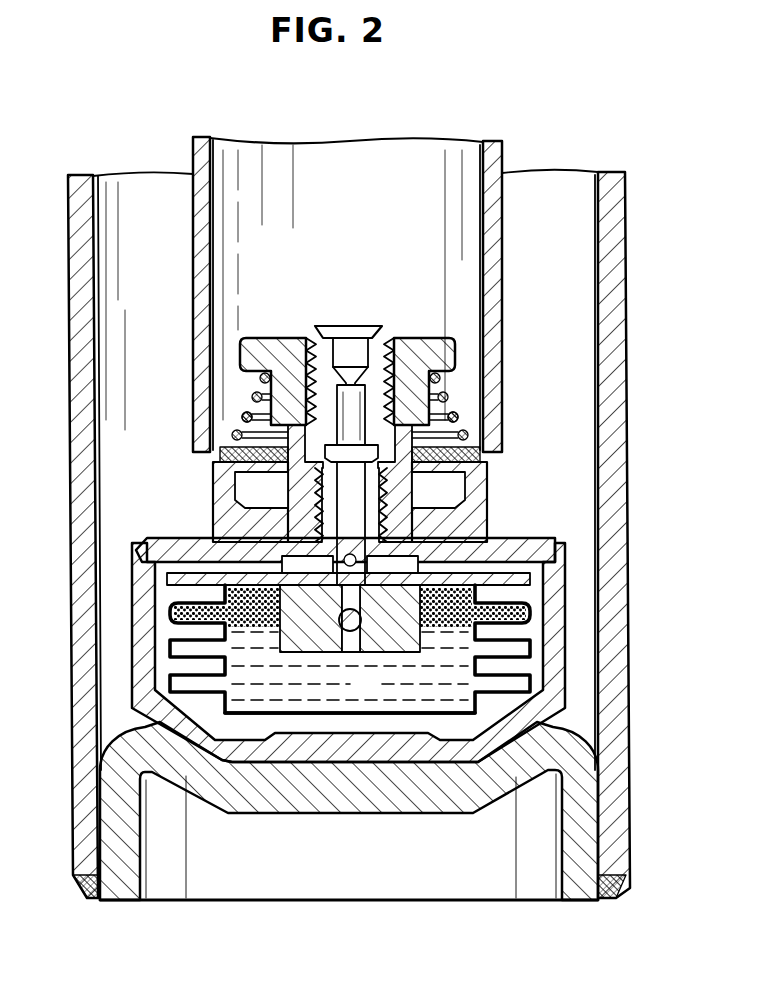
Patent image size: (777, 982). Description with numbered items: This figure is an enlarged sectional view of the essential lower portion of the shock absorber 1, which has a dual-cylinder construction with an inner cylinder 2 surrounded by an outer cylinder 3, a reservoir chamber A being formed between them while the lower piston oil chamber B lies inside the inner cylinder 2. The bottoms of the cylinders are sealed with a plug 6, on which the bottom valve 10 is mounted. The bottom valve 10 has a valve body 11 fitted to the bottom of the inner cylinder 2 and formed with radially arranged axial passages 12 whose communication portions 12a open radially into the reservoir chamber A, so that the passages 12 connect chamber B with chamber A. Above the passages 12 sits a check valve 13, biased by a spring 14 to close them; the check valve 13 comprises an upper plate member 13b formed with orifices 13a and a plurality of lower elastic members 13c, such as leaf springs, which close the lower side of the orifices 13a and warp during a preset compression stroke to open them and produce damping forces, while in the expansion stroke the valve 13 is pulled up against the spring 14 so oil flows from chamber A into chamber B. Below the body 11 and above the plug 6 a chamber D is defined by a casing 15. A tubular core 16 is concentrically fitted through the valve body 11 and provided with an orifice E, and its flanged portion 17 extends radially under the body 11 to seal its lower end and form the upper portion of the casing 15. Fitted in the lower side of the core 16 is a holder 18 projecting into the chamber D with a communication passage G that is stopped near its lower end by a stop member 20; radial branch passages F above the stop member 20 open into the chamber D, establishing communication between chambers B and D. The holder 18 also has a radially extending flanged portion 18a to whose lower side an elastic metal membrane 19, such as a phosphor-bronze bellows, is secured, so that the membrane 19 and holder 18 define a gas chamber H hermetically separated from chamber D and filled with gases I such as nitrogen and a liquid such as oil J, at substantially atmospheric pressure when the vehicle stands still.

The shock absorber 1 is at (622, 279).
The inner cylinder 2 is at (193, 156).
The outer cylinder 3 is at (70, 350).
The plug 6 is at (287, 808).
The bottom valve 10 is at (440, 325).
The valve body 11 is at (208, 500).
The axial passages 12 is at (450, 496).
The communication portions 12a is at (483, 518).
The check valve 13 is at (458, 403).
The orifices 13a is at (468, 431).
The upper plate member 13b is at (240, 418).
The lower elastic members 13c is at (232, 452).
The spring 14 is at (272, 424).
The casing 15 is at (556, 675).
The tubular core 16 is at (388, 338).
The flanged portion 17 is at (134, 540).
The holder 18 is at (522, 580).
The flanged portion 18a is at (462, 740).
The elastic metal membrane 19 is at (408, 735).
The stop member 20 is at (362, 631).
The reservoir chamber A is at (578, 373).
The oil chamber B is at (447, 170).
The chamber D is at (168, 697).
The orifice E is at (350, 333).
The radial branch passages F is at (348, 566).
The communication passage G is at (432, 444).
The gas chamber H is at (267, 703).
The gases I is at (538, 612).
The oil J is at (355, 745).